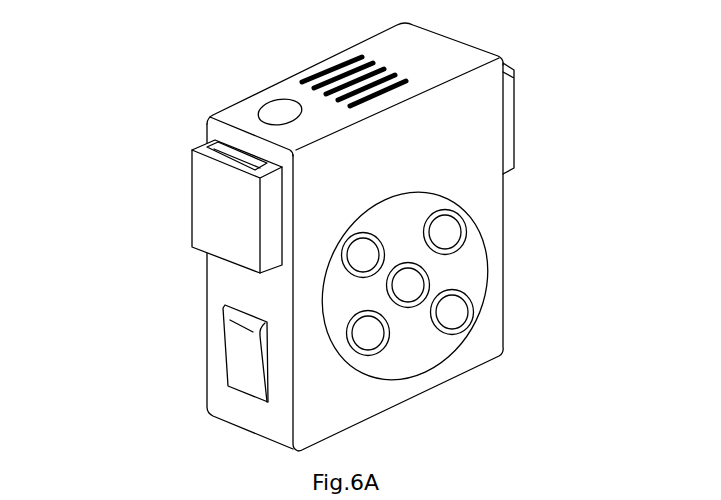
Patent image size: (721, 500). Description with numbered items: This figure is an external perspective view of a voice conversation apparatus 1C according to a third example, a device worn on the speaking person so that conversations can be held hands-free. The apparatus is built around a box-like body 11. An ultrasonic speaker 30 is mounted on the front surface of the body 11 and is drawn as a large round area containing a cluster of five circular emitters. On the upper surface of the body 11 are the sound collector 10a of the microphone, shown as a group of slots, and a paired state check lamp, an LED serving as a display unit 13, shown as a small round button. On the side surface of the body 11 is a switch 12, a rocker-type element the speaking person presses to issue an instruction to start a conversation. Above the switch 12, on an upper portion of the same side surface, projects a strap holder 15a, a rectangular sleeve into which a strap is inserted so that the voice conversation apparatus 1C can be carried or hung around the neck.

The voice conversation apparatus 1C is at (123, 97).
The sound collector 10a is at (386, 65).
The body 11 is at (440, 158).
The ultrasonic speaker 30 is at (487, 243).
The display unit 13 is at (272, 106).
The strap holder 15a is at (212, 193).
The switch 12 is at (240, 355).